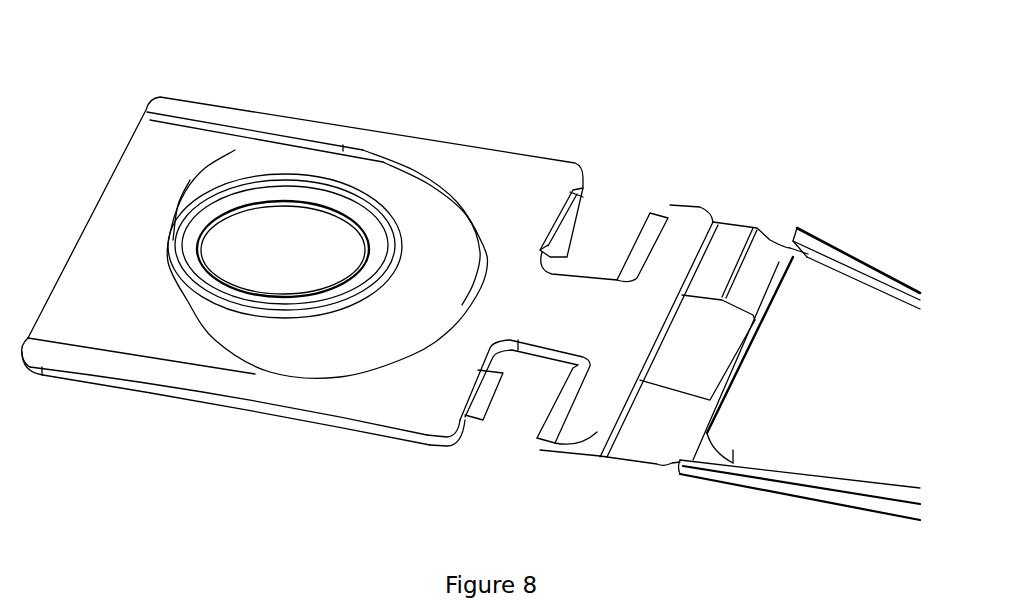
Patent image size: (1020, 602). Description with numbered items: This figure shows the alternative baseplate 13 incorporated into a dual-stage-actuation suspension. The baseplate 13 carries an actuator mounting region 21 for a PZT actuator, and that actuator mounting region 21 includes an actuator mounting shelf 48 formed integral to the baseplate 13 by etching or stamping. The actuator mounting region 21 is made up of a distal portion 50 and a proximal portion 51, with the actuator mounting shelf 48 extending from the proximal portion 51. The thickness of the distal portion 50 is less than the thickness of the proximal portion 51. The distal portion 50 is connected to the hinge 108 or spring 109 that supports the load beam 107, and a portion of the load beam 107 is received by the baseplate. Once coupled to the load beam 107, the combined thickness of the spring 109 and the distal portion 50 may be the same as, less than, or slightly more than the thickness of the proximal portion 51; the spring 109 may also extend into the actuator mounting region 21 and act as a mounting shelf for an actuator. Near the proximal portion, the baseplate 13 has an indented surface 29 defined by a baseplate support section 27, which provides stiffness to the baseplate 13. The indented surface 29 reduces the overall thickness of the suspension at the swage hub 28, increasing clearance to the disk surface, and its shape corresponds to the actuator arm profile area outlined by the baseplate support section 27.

The baseplate 13 is at (97, 122).
The baseplate support section 27 is at (97, 362).
The swage hub 28 is at (337, 183).
The indented surface 29 is at (92, 290).
The actuator mounting shelf 48 is at (573, 223).
The actuator mounting region 21 is at (547, 365).
The proximal portion 51 is at (422, 442).
The distal portion 50 is at (583, 433).
The hinge 108 is at (753, 228).
The load beam 107 is at (893, 275).
The spring 109 is at (587, 460).